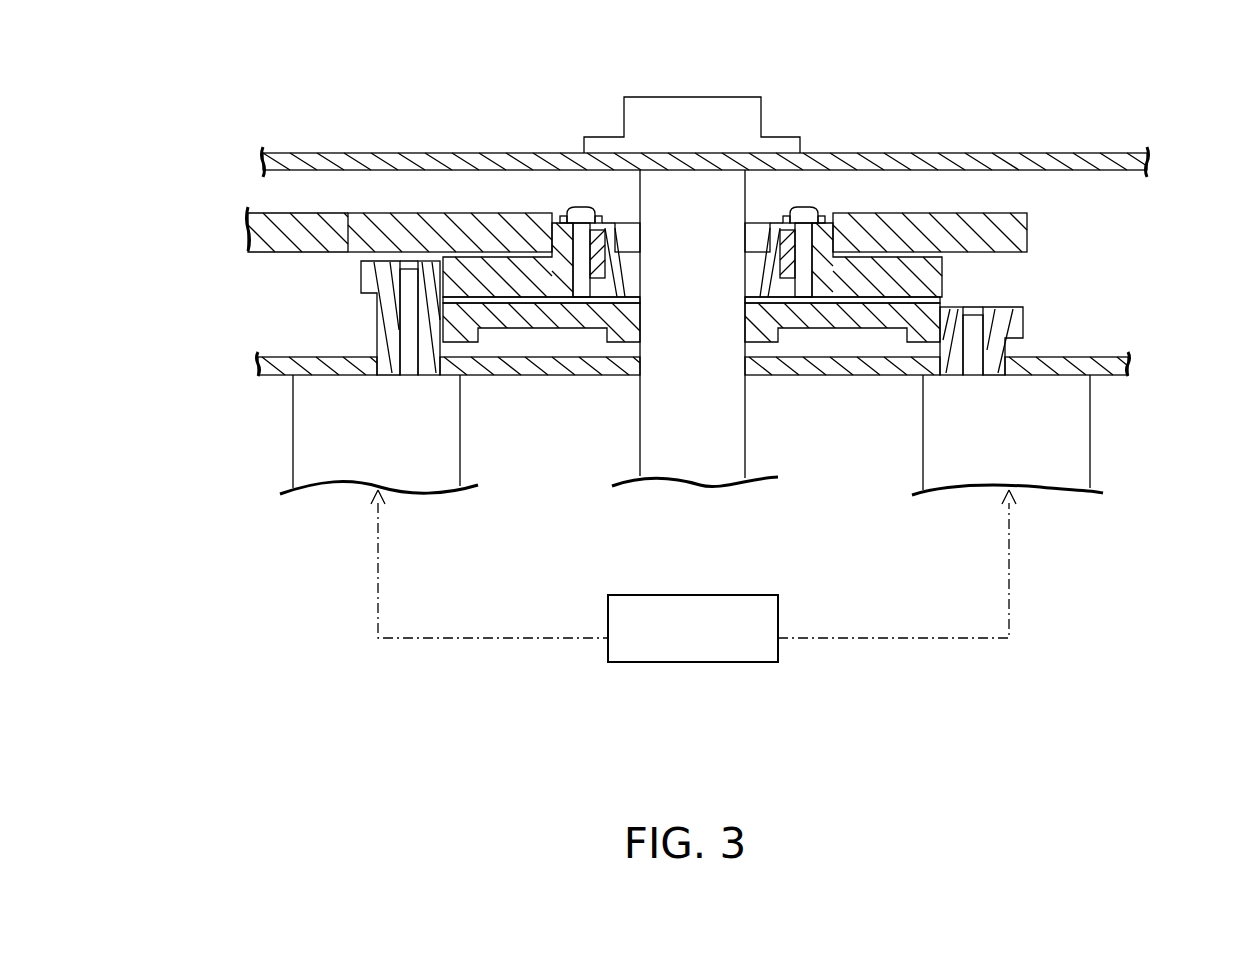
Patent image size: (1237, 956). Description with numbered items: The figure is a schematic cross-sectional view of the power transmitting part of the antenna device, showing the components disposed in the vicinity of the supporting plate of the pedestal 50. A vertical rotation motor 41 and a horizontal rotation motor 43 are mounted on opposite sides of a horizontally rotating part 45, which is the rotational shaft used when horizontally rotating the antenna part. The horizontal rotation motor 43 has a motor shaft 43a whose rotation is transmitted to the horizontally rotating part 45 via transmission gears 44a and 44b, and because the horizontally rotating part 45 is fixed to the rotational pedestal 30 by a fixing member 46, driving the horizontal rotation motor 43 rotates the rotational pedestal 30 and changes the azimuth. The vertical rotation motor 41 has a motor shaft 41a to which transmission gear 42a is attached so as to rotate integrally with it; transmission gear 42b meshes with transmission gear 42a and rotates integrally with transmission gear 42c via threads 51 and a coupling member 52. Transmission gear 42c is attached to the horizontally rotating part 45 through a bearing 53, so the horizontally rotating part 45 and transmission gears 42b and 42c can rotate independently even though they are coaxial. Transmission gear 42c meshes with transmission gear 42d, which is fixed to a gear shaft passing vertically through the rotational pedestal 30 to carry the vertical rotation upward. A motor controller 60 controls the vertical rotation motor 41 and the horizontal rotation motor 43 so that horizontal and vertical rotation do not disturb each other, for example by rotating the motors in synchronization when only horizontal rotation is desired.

The rotational pedestal 30 is at (960, 153).
The vertical rotation motor 41 is at (300, 452).
The motor shaft 41a is at (407, 335).
The transmission gear 42a is at (362, 283).
The transmission gear 42b is at (518, 272).
The transmission gear 42c is at (487, 225).
The transmission gear 42d is at (275, 227).
The horizontal rotation motor 43 is at (1078, 452).
The motor shaft 43a is at (978, 330).
The transmission gear 44a is at (1003, 312).
The transmission gear 44b is at (860, 322).
The horizontally rotating part 45 is at (730, 453).
The fixing member 46 is at (730, 107).
The pedestal 50 is at (1130, 366).
The threads 51 is at (580, 207).
The coupling member 52 is at (612, 232).
The bearing 53 is at (628, 233).
The motor controller 60 is at (693, 662).